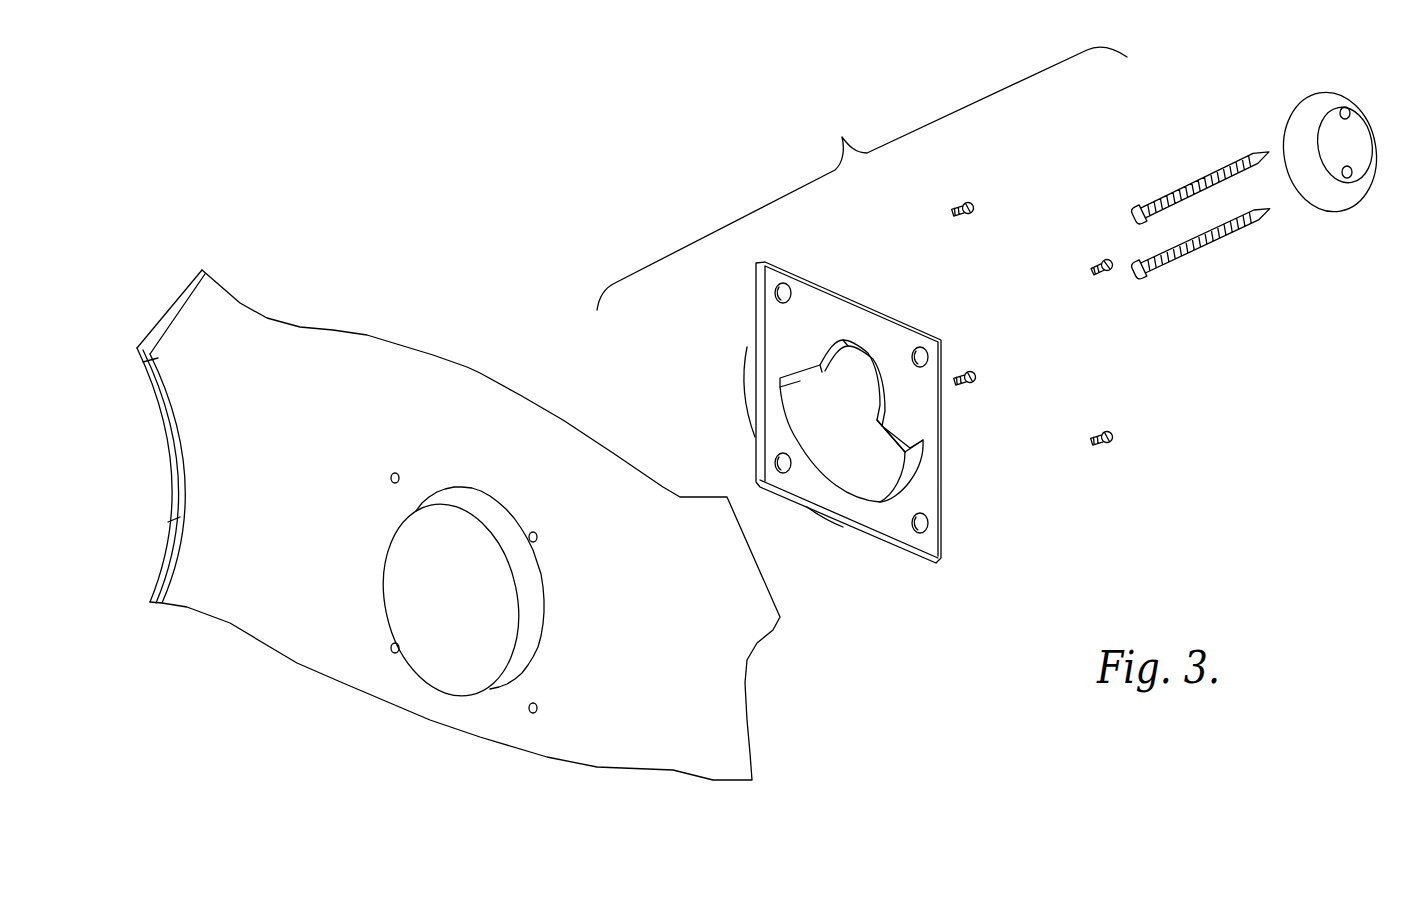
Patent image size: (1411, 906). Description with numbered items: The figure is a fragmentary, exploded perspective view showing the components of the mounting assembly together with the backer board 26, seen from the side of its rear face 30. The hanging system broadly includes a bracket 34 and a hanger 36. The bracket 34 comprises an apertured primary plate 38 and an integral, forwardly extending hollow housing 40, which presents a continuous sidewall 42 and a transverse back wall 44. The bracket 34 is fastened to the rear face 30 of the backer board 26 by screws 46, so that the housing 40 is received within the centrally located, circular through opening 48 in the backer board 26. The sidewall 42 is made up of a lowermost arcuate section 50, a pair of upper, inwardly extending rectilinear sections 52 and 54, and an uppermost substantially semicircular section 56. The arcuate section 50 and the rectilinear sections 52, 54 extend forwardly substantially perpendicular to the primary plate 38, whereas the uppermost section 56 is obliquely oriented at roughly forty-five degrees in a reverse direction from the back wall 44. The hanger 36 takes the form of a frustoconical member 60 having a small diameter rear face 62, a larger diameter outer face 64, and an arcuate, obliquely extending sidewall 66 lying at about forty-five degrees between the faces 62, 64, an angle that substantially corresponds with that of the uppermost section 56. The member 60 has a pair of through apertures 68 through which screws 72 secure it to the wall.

The backer board 26 is at (168, 470).
The rear face 30 is at (473, 525).
The bracket 34 is at (871, 433).
The hanger 36 is at (1292, 161).
The primary plate 38 is at (893, 527).
The hollow housing 40 is at (832, 527).
The sidewall 42 is at (913, 460).
The back wall 44 is at (873, 463).
The screws 46 is at (1090, 263).
The through opening 48 is at (460, 490).
The lowermost arcuate section 50 is at (910, 490).
The rectilinear section 52 is at (781, 382).
The rectilinear section 54 is at (913, 432).
The uppermost semicircular section 56 is at (862, 357).
The frustoconical member 60 is at (1377, 158).
The rear face 62 is at (1328, 130).
The outer face 64 is at (1318, 203).
The sidewall 66 is at (1348, 197).
The through apertures 68 is at (1343, 108).
The screws 72 is at (1187, 183).